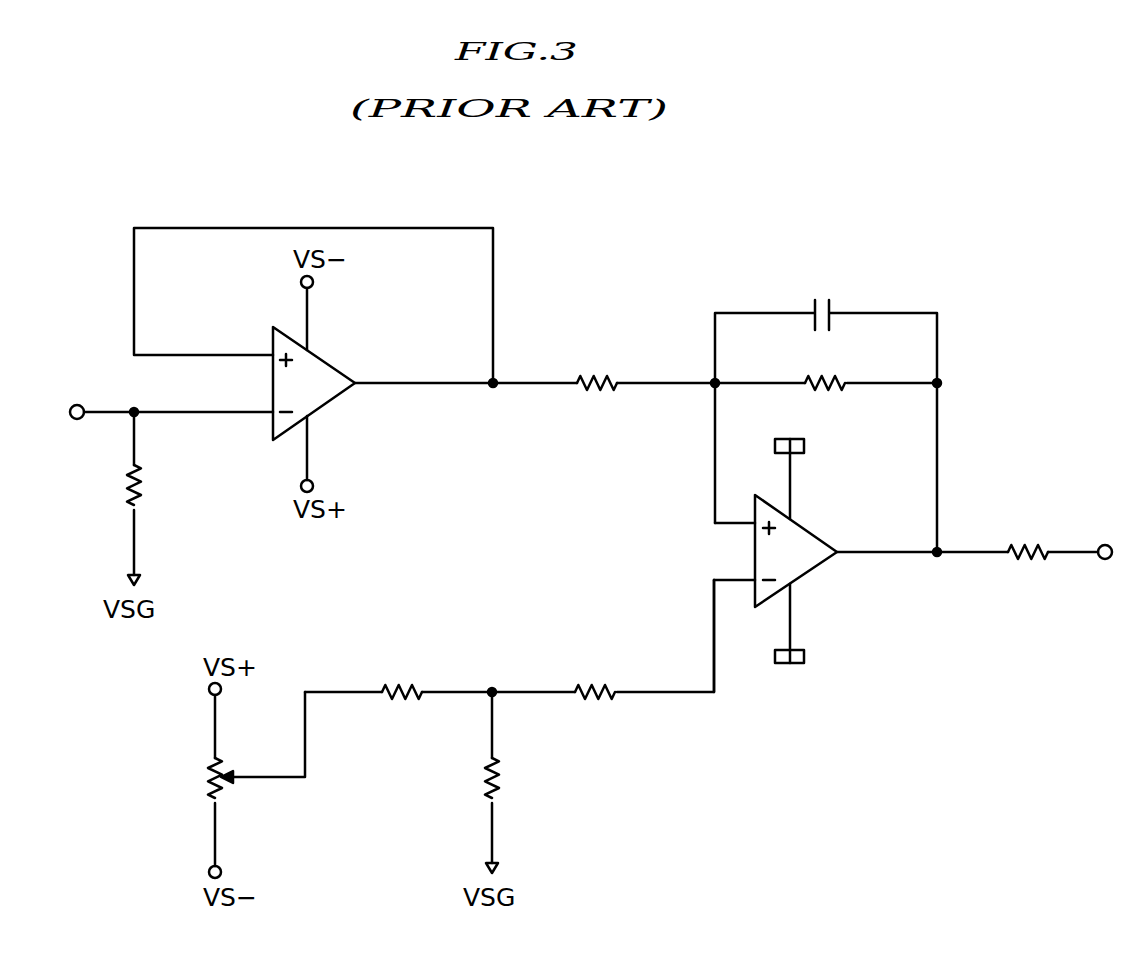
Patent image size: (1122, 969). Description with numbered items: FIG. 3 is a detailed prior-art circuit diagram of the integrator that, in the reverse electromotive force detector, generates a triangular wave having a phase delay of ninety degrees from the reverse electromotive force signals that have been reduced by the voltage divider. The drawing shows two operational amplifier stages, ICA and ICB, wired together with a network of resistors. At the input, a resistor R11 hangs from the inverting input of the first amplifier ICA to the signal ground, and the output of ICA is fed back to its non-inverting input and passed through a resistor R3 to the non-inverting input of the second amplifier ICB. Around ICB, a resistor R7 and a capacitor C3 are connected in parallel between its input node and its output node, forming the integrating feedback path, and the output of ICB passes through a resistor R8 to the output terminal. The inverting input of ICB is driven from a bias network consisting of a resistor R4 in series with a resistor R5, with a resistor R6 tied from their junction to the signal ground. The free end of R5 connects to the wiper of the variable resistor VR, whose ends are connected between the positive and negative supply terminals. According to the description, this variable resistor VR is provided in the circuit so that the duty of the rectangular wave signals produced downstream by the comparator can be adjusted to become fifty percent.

The first operational amplifier ICA is at (330, 384).
The second operational amplifier ICB is at (797, 551).
The input resistor R11 is at (161, 498).
The resistor R3 is at (604, 369).
The feedback resistor R7 is at (826, 368).
The feedback capacitor C3 is at (826, 410).
The output resistor R8 is at (967, 536).
The resistor R4 is at (603, 639).
The resistor R5 is at (398, 676).
The resistor R6 is at (510, 782).
The variable resistor VR is at (256, 780).